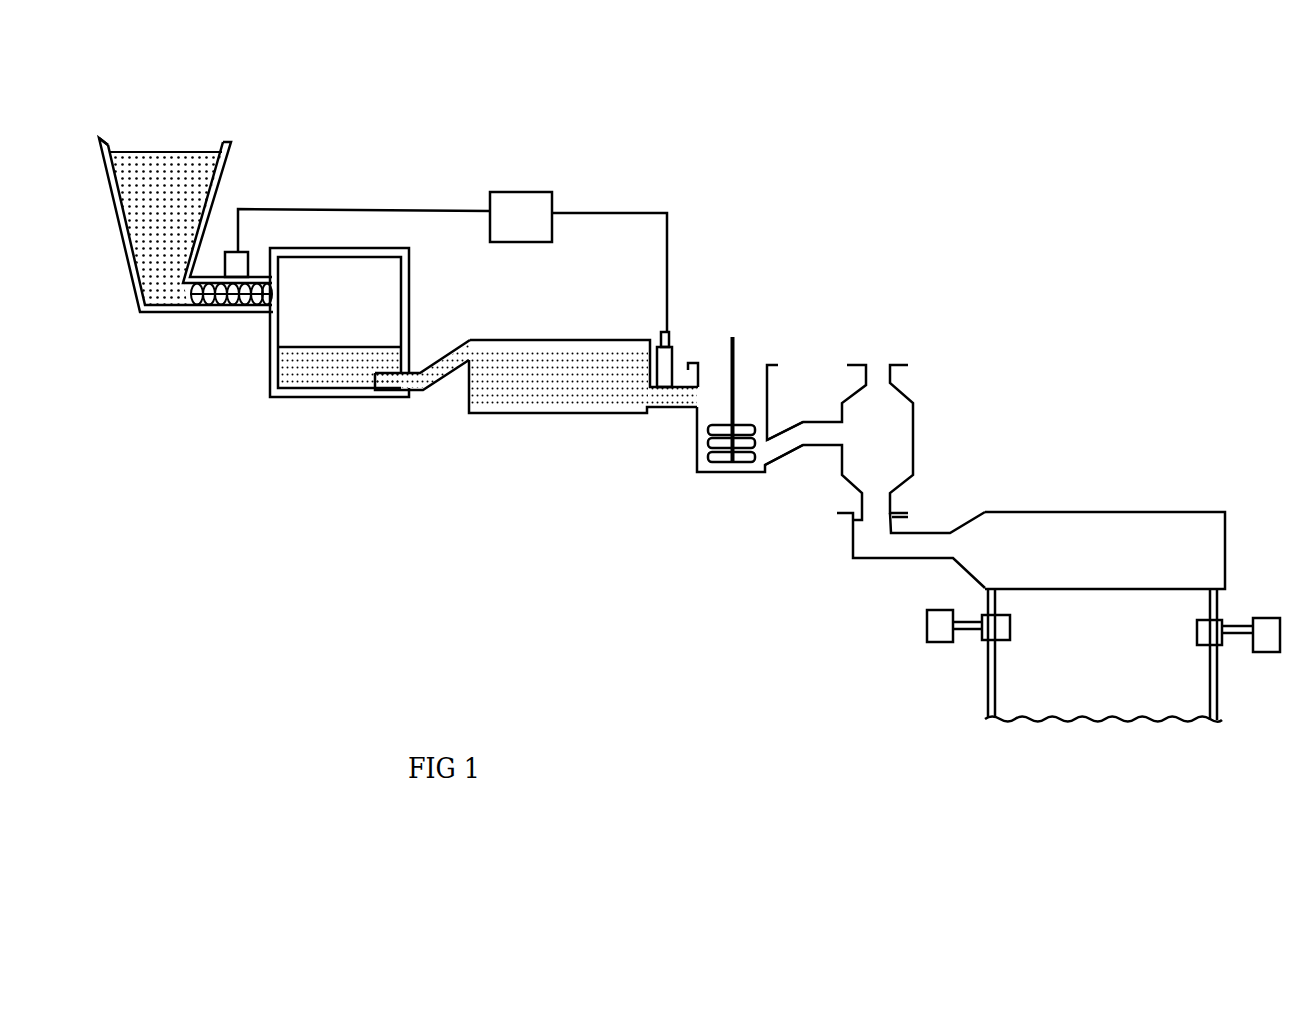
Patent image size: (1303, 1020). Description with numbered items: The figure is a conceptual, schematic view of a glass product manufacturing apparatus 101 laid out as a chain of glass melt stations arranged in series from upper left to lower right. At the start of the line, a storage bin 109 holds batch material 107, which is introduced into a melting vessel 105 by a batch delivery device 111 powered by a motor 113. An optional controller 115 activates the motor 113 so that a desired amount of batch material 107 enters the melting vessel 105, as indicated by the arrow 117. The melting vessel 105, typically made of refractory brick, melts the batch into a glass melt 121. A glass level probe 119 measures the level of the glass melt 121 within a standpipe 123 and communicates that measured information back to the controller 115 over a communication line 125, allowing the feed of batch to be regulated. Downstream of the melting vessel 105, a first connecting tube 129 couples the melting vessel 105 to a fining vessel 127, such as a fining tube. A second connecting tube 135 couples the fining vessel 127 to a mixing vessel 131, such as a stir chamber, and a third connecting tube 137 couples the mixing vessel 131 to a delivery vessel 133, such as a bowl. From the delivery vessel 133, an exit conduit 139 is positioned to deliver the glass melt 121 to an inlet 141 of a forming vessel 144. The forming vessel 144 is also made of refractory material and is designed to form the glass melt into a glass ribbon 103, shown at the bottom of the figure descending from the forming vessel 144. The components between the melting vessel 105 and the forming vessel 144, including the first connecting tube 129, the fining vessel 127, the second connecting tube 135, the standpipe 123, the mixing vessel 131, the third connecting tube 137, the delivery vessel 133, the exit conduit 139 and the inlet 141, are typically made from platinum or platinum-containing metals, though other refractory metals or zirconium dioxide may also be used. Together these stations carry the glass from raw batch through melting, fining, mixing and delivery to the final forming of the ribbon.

The glass product manufacturing apparatus 101 is at (917, 268).
The glass ribbon 103 is at (1083, 600).
The melting vessel 105 is at (314, 412).
The batch material 107 is at (166, 147).
The storage bin 109 is at (119, 225).
The batch delivery device 111 is at (222, 314).
The motor 113 is at (250, 253).
The controller 115 is at (522, 191).
The arrow 117 is at (348, 334).
The glass level probe 119 is at (661, 333).
The glass melt 121 is at (373, 338).
The standpipe 123 is at (673, 352).
The communication line 125 is at (613, 212).
The fining vessel 127 is at (555, 337).
The first connecting tube 129 is at (442, 357).
The mixing vessel 131 is at (770, 391).
The delivery vessel 133 is at (917, 426).
The second connecting tube 135 is at (671, 410).
The third connecting tube 137 is at (787, 454).
The exit conduit 139 is at (893, 504).
The inlet 141 is at (853, 534).
The forming vessel 144 is at (1180, 511).